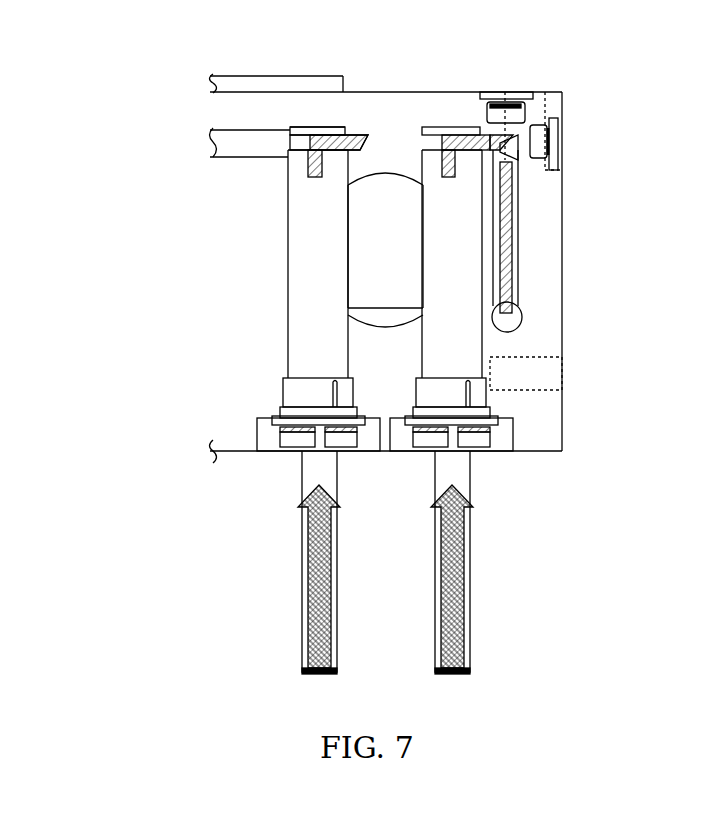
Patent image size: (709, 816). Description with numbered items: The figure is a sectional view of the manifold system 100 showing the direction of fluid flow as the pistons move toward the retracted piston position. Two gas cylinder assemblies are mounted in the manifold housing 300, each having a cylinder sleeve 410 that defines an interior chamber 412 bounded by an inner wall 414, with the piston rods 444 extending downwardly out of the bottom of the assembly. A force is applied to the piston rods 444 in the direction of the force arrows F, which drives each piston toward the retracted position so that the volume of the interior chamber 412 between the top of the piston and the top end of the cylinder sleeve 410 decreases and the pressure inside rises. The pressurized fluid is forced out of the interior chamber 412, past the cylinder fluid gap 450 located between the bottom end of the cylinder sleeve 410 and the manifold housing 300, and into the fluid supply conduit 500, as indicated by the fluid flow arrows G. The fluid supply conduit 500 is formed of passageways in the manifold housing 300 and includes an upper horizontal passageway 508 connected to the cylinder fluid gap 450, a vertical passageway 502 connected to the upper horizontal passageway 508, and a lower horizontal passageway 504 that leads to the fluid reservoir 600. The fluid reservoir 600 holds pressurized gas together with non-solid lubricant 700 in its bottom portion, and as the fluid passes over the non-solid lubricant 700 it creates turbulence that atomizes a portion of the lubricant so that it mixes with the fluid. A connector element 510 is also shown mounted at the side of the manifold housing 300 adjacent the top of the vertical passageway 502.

The manifold system 100 is at (394, 56).
The manifold housing 300 is at (418, 110).
The cylinder sleeve 410 is at (287, 310).
The interior chamber 412 is at (306, 215).
The inner wall 414 is at (347, 288).
The piston rods 444 is at (313, 472).
The cylinder fluid gap 450 is at (340, 138).
The fluid supply conduit 500 is at (591, 214).
The vertical passageway 502 is at (512, 243).
The lower horizontal passageway 504 is at (504, 322).
The upper horizontal passageway 508 is at (382, 142).
The sensor connector 510 is at (530, 150).
The fluid reservoir 600 is at (362, 254).
The non-solid lubricant 700 is at (372, 320).
The fluid flow arrows G is at (322, 142).
The force arrows F is at (322, 595).